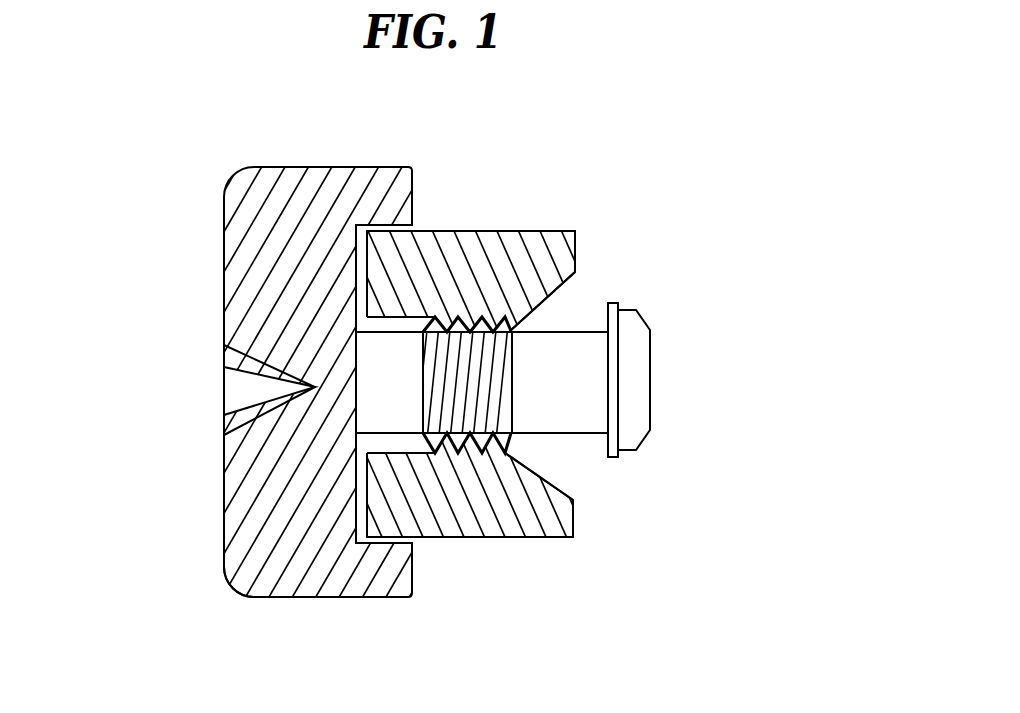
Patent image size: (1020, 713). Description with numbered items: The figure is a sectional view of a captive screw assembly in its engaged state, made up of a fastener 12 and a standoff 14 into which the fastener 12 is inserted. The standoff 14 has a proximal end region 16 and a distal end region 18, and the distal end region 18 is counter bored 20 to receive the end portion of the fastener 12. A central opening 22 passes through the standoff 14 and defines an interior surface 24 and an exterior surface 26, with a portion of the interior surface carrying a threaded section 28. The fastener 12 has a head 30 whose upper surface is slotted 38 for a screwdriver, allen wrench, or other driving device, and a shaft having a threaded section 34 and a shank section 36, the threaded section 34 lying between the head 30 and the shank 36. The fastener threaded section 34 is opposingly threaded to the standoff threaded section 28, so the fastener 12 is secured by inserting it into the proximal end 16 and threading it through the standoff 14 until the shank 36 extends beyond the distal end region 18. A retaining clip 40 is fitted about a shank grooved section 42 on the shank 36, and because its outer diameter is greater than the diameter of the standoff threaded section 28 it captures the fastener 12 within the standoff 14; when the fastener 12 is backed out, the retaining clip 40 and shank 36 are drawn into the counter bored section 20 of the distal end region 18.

The fastener 12 is at (291, 167).
The standoff 14 is at (524, 231).
The proximal end region 16 is at (348, 237).
The distal end region 18 is at (575, 536).
The counter bore 20 is at (568, 287).
The central opening 22 is at (377, 447).
The interior surface 24 is at (413, 573).
The exterior surface 26 is at (542, 538).
The threaded section 28 is at (462, 300).
The head 30 is at (257, 585).
The threaded section 34 is at (477, 425).
The shank section 36 is at (652, 330).
The slot 38 is at (224, 356).
The retaining clip 40 is at (613, 303).
The shank grooved section 42 is at (607, 433).